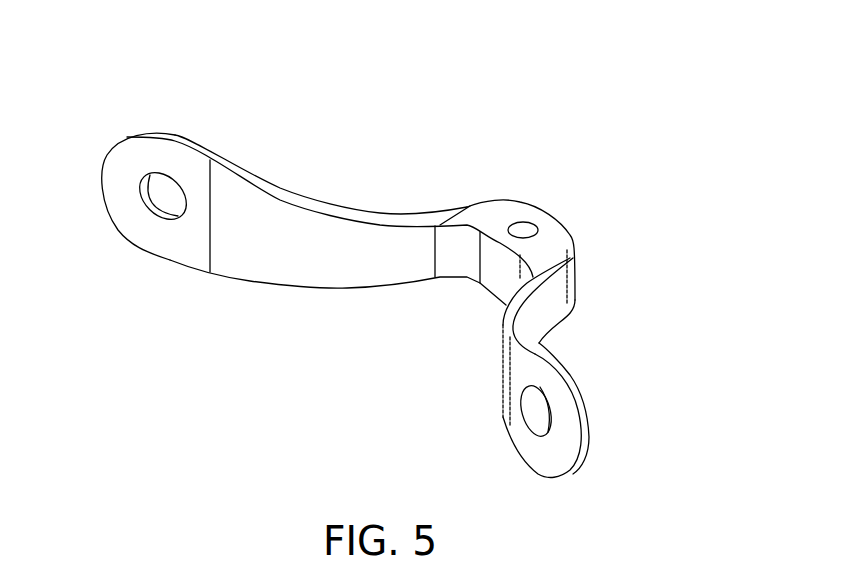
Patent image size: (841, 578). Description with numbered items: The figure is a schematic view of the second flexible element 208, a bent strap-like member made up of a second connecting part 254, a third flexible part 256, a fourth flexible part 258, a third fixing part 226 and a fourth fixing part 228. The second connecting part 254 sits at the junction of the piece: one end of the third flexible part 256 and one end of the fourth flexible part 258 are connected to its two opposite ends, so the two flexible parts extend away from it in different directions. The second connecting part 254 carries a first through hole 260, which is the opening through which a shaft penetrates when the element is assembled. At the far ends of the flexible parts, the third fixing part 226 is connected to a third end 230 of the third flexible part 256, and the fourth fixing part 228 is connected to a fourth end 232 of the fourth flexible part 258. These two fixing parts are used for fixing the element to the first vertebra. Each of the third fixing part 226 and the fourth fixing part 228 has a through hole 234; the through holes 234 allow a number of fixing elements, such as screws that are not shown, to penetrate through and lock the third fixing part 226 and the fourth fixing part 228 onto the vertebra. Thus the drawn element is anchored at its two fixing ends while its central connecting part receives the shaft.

The second flexible element 208 is at (738, 60).
The third fixing part 226 is at (550, 450).
The fourth fixing part 228 is at (170, 135).
The third end 230 is at (480, 366).
The fourth end 232 is at (224, 134).
The through hole 234 is at (159, 202).
The second connecting part 254 is at (553, 232).
The third flexible part 256 is at (555, 307).
The fourth flexible part 258 is at (258, 180).
The first through hole 260 is at (526, 221).